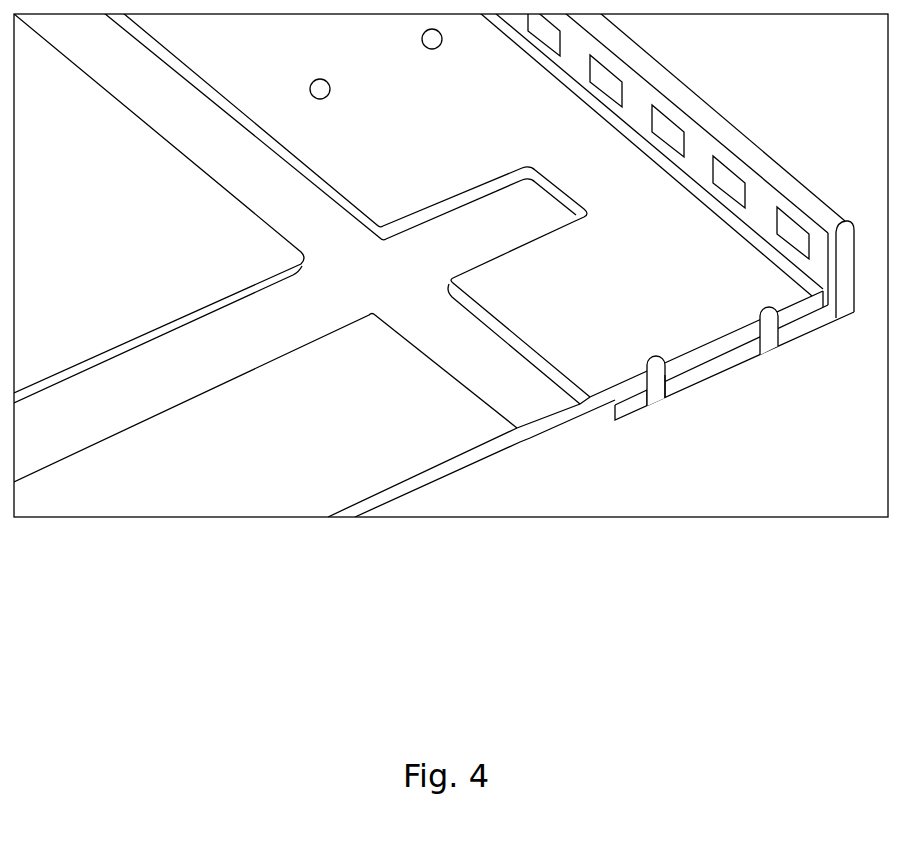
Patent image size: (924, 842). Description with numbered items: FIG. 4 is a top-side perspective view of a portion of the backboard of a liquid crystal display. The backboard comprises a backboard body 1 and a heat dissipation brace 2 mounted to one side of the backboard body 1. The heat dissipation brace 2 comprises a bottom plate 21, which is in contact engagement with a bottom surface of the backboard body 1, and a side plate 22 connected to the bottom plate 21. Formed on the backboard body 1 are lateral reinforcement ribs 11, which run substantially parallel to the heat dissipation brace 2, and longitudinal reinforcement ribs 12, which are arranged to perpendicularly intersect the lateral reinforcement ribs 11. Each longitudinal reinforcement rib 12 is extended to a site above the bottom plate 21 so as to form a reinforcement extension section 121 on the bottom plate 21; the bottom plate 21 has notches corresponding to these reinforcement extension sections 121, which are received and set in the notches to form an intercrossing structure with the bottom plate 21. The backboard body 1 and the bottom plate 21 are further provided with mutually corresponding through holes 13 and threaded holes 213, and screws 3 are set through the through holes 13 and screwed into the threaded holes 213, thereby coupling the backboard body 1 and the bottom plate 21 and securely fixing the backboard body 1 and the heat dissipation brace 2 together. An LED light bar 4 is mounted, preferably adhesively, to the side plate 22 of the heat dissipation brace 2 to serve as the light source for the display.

The backboard body 1 is at (499, 452).
The lateral reinforcement ribs 11 is at (239, 175).
The longitudinal reinforcement ribs 12 is at (318, 324).
The reinforcement extension sections 121 is at (532, 225).
The through holes 13 is at (667, 375).
The heat dissipation brace 2 is at (669, 229).
The bottom plate 21 is at (734, 379).
The threaded holes 213 is at (655, 390).
The side plate 22 is at (846, 268).
The screws 3 is at (657, 357).
The LED light bar 4 is at (693, 155).